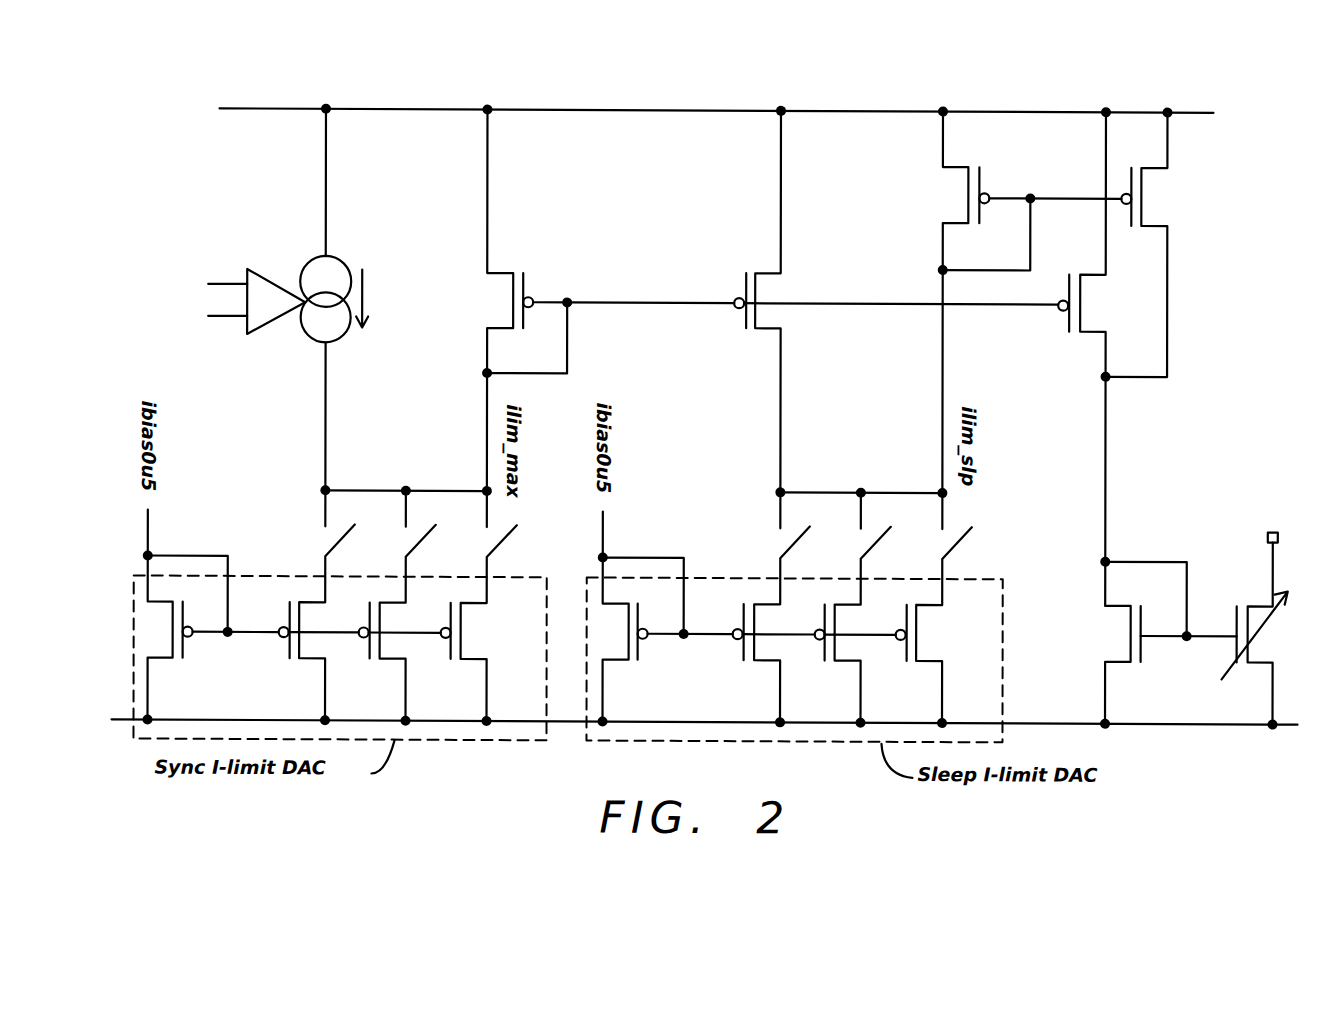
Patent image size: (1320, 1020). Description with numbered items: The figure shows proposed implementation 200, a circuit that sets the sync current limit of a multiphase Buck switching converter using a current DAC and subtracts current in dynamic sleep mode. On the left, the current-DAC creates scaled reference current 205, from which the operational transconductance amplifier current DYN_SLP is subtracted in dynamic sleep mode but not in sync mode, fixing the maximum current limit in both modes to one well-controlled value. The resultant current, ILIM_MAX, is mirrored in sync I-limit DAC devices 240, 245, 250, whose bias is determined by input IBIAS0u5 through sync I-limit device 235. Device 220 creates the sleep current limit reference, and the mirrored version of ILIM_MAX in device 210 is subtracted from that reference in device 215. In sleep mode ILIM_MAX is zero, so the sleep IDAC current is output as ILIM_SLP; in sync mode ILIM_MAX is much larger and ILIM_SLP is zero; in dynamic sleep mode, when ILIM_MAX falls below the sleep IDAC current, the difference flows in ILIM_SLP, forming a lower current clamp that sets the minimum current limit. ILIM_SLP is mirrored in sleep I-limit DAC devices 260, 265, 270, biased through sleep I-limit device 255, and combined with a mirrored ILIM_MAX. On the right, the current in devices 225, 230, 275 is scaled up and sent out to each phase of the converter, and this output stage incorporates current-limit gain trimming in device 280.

The proposed implementation 200 is at (295, 78).
The scaled reference current 205 is at (373, 301).
The device 210 is at (532, 286).
The device 215 is at (795, 286).
The device 220 is at (990, 178).
The device 225 is at (1187, 180).
The device 230 is at (1127, 284).
The sync I-limit device 235 is at (163, 663).
The sync I-limit DAC device 240 is at (330, 650).
The sync I-limit DAC device 245 is at (411, 650).
The sync I-limit DAC device 250 is at (492, 650).
The sleep I-limit device 255 is at (617, 665).
The sleep I-limit DAC device 260 is at (785, 650).
The sleep I-limit DAC device 265 is at (867, 650).
The sleep I-limit DAC device 270 is at (950, 650).
The device 275 is at (1120, 672).
The device 280 is at (1252, 597).